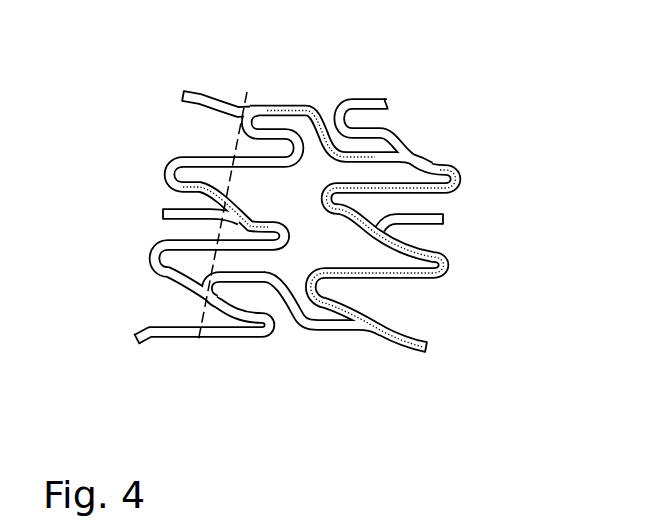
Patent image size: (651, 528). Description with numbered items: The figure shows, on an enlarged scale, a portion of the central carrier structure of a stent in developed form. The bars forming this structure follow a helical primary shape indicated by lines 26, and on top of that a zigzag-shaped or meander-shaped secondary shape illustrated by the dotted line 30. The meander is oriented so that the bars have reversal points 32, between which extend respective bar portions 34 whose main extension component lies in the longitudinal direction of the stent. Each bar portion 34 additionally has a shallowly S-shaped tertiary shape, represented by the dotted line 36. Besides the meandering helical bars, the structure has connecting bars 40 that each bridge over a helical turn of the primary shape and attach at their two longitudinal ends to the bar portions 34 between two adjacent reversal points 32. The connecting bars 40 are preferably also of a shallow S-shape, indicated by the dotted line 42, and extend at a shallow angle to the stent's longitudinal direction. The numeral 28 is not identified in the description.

The lines 26 is at (240, 128).
The free end 28 is at (147, 347).
The dotted line 30 is at (433, 198).
The reversal points 32 is at (150, 260).
The bar portions 34 is at (203, 288).
The dotted line 36 is at (183, 202).
The connecting bars 40 is at (340, 326).
The dotted line 42 is at (280, 103).